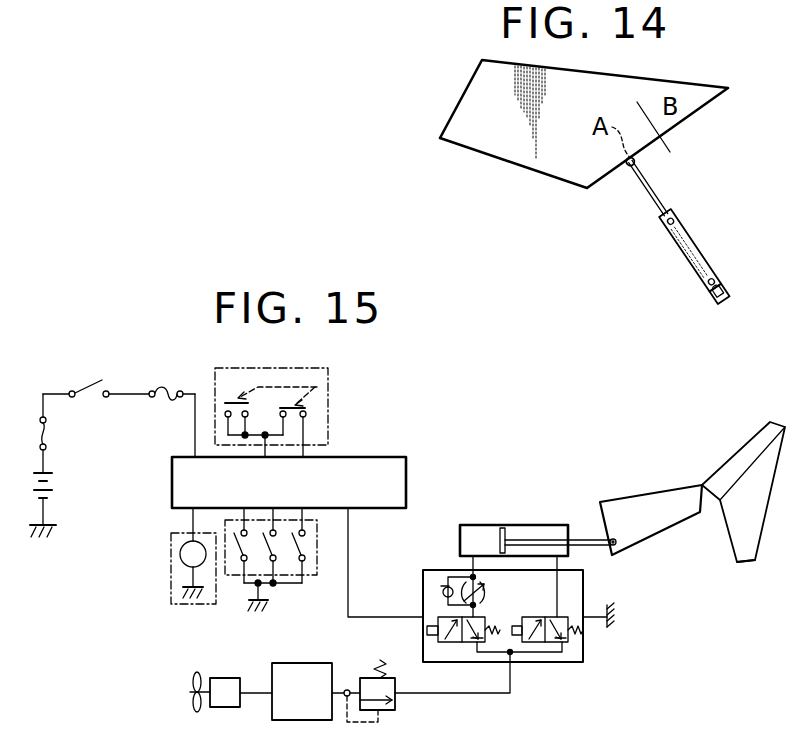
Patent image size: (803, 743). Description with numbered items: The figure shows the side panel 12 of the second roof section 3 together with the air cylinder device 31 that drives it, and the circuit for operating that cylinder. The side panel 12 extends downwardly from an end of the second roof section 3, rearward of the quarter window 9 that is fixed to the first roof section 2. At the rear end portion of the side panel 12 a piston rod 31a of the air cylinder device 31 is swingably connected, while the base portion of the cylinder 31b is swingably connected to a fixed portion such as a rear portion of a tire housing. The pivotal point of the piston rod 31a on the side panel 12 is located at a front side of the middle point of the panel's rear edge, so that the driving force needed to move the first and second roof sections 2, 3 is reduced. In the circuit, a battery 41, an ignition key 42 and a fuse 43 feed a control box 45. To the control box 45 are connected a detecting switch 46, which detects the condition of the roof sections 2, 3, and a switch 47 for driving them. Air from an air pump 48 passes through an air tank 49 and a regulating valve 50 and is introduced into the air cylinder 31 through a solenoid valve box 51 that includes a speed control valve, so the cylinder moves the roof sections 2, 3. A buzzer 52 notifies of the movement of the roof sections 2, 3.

In FIG. 15, the first roof section 2 is at (733, 453).
In FIG. 15, the second roof section 3 is at (620, 496).
In FIG. 15, the quarter window structure 9 is at (737, 548).
In FIG. 14, the side panel 12 is at (497, 152).
In FIG. 15, the side panel 12 is at (655, 500).
In FIG. 14, the air cylinder device 31 is at (635, 230).
In FIG. 15, the air cylinder device 31 is at (483, 525).
In FIG. 14, the piston rod 31a is at (645, 193).
In FIG. 14, the cylinder 31b is at (676, 256).
In FIG. 15, the battery 41 is at (55, 479).
In FIG. 15, the ignition key 42 is at (90, 380).
In FIG. 15, the fuse 43 is at (165, 389).
In FIG. 15, the control box 45 is at (382, 457).
In FIG. 15, the detecting switch 46 is at (318, 560).
In FIG. 15, the switch 47 is at (328, 423).
In FIG. 15, the air pump 48 is at (222, 678).
In FIG. 15, the air tank 49 is at (302, 663).
In FIG. 15, the regulating valve 50 is at (395, 707).
In FIG. 15, the solenoid valve box 51 is at (585, 652).
In FIG. 15, the buzzer 52 is at (170, 588).